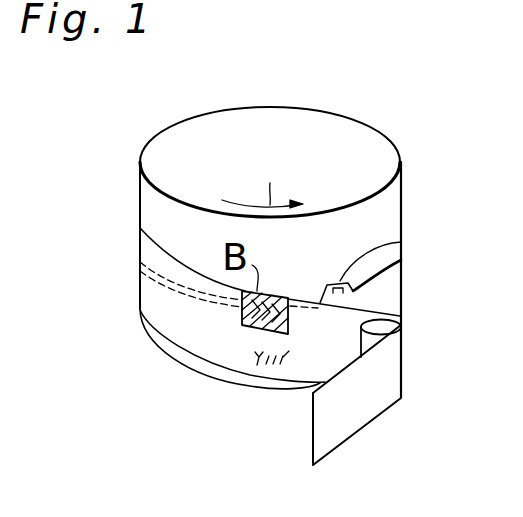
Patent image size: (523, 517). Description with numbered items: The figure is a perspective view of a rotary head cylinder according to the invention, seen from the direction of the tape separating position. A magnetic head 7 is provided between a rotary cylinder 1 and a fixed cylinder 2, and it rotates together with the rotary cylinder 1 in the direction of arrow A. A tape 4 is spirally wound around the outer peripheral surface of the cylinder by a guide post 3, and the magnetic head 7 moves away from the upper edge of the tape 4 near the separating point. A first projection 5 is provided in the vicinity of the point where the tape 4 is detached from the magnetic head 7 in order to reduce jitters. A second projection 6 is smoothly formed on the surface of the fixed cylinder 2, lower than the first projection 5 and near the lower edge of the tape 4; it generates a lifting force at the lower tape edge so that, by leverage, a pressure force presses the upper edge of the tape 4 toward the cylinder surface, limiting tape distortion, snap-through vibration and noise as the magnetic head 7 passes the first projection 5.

The rotary cylinder 1 is at (401, 200).
The fixed cylinder 2 is at (401, 291).
The guide post 3 is at (401, 332).
The tape 4 is at (368, 424).
The first projection 5 is at (242, 318).
The second projection 6 is at (250, 353).
The magnetic head 7 is at (401, 242).